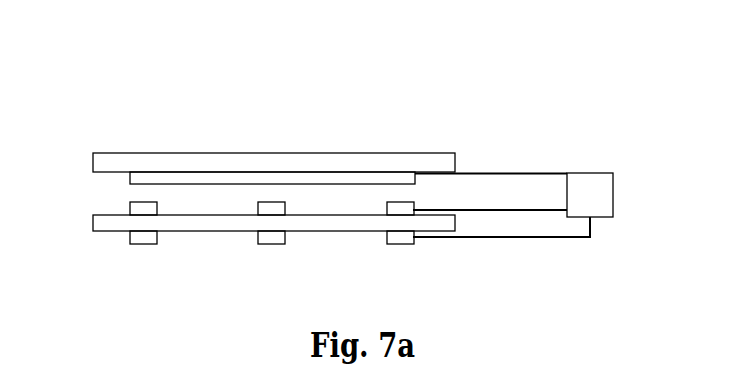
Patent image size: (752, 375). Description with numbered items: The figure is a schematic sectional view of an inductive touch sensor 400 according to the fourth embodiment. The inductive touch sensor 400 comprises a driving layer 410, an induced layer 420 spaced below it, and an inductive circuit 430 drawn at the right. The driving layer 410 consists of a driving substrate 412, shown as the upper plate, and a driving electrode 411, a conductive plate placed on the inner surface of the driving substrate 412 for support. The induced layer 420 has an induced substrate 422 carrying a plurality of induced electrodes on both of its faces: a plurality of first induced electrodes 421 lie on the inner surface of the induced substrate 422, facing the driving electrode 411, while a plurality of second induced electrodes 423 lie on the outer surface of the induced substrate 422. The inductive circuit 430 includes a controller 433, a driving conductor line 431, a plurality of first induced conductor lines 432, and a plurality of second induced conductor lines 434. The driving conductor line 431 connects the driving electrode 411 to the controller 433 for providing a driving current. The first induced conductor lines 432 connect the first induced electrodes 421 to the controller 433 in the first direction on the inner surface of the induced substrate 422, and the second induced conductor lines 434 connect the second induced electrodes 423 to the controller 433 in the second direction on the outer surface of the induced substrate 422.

The inductive touch sensor 400 is at (367, 158).
The driving layer 410 is at (80, 155).
The driving electrode 411 is at (218, 175).
The driving substrate 412 is at (325, 163).
The induced layer 420 is at (85, 235).
The first induced electrodes 421 is at (145, 213).
The induced substrate 422 is at (323, 222).
The second induced electrodes 423 is at (145, 237).
The inductive circuit 430 is at (663, 142).
The driving conductor line 431 is at (500, 173).
The first induced conductor lines 432 is at (490, 209).
The controller 433 is at (595, 203).
The second induced conductor lines 434 is at (503, 237).